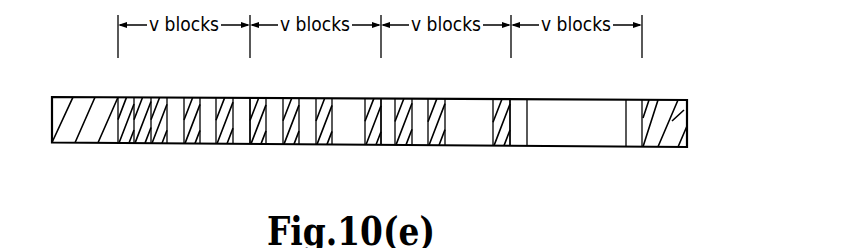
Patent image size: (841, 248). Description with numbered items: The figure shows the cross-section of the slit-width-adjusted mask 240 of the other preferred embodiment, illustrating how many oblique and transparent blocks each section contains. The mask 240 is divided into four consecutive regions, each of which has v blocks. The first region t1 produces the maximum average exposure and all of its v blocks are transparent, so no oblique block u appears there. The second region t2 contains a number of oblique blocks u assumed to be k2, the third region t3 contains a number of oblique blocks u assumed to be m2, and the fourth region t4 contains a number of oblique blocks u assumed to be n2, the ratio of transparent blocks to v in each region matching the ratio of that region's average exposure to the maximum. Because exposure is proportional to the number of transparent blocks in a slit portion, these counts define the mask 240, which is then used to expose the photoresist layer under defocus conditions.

The mask 240 is at (687, 112).
The fourth region t4 is at (250, 98).
The third region t3 is at (250, 98).
The second region t2 is at (511, 99).
The first region t1 is at (642, 100).
The oblique block u is at (497, 181).